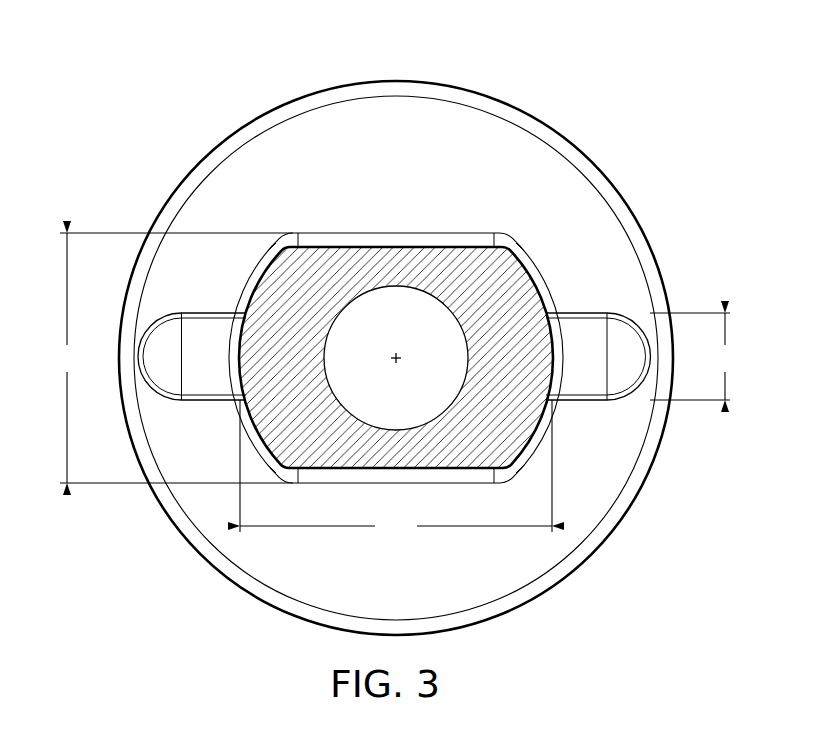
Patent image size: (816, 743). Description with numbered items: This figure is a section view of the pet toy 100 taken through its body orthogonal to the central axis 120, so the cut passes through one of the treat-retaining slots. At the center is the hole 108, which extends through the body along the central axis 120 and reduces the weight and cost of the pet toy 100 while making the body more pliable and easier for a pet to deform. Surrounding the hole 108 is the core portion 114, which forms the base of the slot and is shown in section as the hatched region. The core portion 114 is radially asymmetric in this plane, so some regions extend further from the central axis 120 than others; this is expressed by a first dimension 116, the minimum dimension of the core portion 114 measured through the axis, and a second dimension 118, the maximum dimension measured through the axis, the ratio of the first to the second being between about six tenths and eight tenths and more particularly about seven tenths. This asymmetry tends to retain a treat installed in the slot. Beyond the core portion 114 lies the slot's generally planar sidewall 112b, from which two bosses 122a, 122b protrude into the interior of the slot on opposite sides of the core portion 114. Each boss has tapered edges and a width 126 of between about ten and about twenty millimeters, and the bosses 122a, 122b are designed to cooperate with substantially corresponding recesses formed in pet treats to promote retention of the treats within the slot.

The pet toy 100 is at (368, 322).
The sidewall 112b is at (247, 160).
The core portion 114 is at (358, 262).
The hole 108 is at (396, 331).
The central axis 120 is at (398, 355).
The boss 122a is at (207, 330).
The boss 122b is at (579, 329).
The first dimension 116 is at (172, 358).
The second dimension 118 is at (396, 469).
The width 126 is at (699, 356).